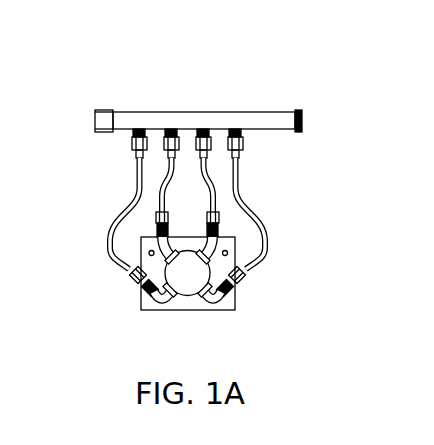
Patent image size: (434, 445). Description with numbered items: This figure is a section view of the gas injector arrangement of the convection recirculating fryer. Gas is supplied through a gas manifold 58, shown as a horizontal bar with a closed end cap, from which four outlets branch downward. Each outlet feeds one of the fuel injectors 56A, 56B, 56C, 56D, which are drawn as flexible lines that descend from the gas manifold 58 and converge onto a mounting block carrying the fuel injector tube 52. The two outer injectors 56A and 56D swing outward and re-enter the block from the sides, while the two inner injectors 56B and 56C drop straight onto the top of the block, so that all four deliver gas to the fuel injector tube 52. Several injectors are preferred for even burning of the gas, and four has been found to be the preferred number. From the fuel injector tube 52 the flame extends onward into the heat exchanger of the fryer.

The gas manifold 58 is at (202, 110).
The fuel injector 56A is at (105, 235).
The fuel injector 56B is at (157, 193).
The fuel injector 56C is at (222, 197).
The fuel injector 56D is at (273, 237).
The fuel injector tube 52 is at (158, 277).